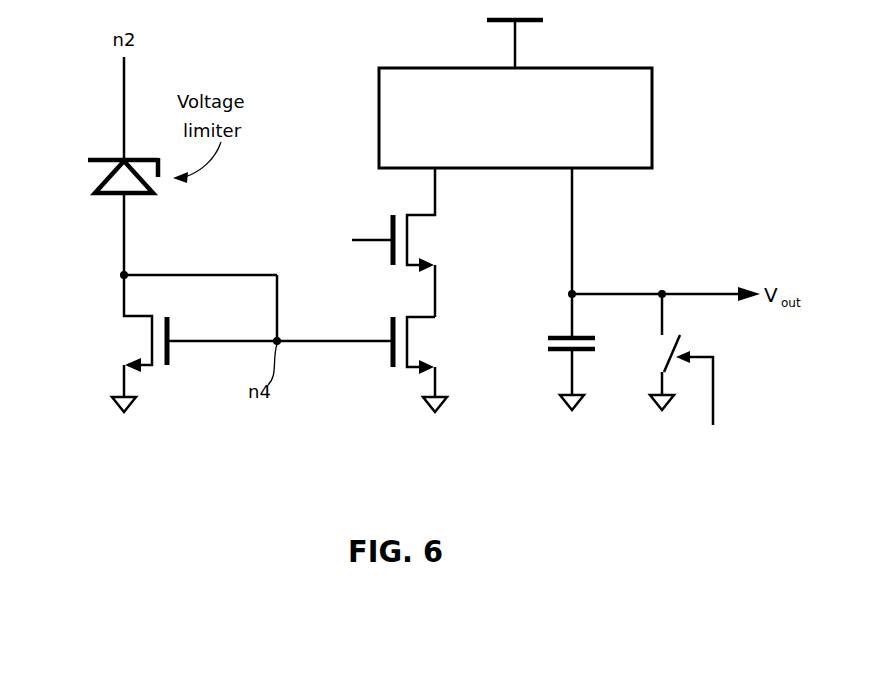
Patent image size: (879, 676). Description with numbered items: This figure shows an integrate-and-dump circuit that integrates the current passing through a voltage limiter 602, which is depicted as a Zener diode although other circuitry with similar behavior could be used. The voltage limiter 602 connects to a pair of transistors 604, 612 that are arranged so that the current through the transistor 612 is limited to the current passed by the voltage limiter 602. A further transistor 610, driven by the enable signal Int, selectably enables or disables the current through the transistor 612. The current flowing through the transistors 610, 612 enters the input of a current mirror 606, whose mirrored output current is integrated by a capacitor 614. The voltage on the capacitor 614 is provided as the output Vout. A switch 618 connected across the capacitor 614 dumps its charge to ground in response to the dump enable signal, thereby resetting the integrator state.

The voltage limiter 602 is at (100, 181).
The transistor 604 is at (140, 331).
The current mirror 606 is at (400, 67).
The transistor 610 is at (392, 222).
The transistor 612 is at (392, 330).
The capacitor 614 is at (548, 340).
The switch 618 is at (661, 346).